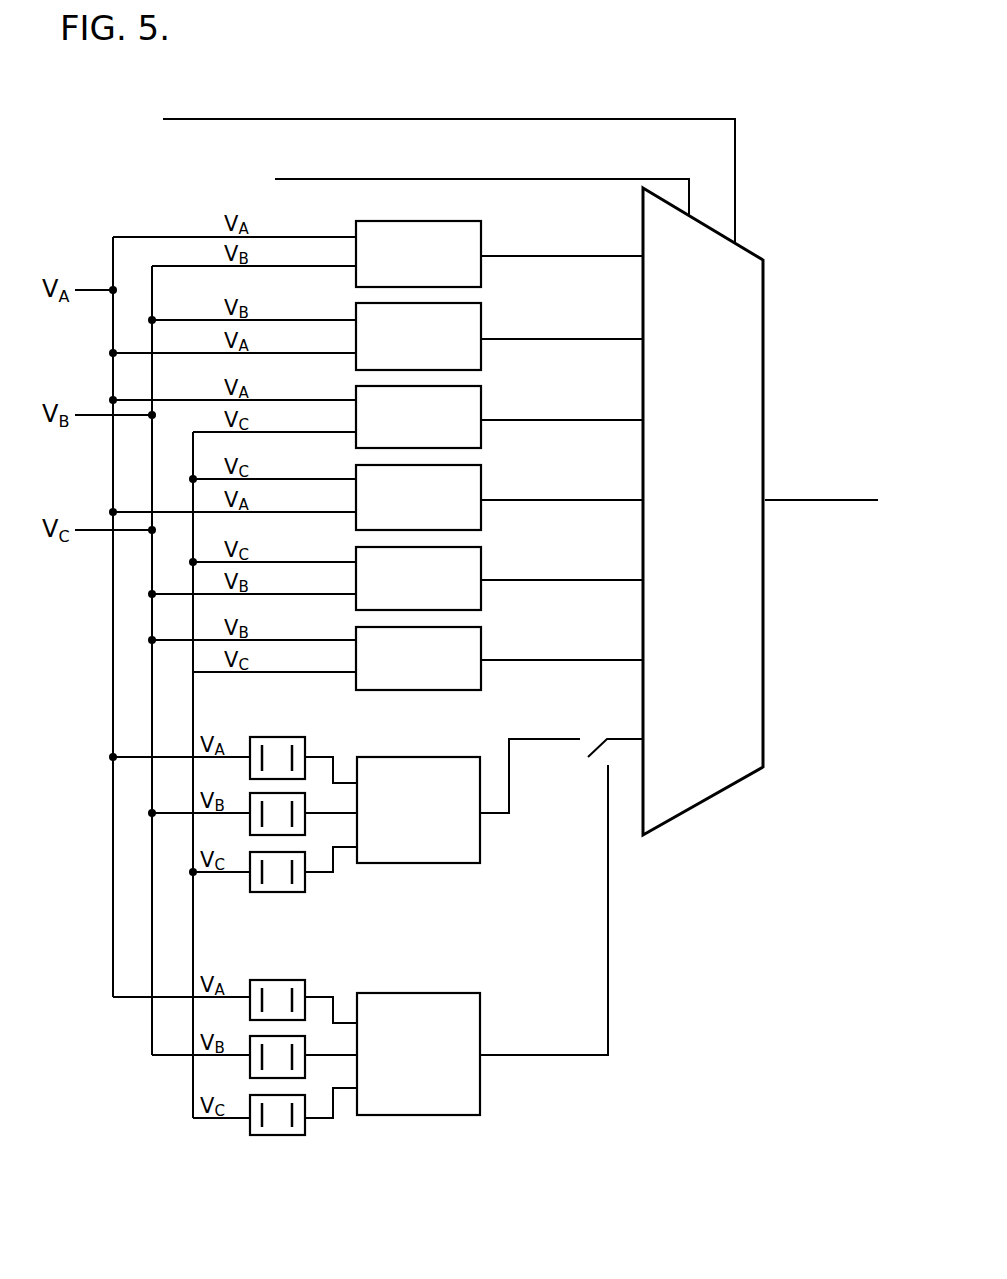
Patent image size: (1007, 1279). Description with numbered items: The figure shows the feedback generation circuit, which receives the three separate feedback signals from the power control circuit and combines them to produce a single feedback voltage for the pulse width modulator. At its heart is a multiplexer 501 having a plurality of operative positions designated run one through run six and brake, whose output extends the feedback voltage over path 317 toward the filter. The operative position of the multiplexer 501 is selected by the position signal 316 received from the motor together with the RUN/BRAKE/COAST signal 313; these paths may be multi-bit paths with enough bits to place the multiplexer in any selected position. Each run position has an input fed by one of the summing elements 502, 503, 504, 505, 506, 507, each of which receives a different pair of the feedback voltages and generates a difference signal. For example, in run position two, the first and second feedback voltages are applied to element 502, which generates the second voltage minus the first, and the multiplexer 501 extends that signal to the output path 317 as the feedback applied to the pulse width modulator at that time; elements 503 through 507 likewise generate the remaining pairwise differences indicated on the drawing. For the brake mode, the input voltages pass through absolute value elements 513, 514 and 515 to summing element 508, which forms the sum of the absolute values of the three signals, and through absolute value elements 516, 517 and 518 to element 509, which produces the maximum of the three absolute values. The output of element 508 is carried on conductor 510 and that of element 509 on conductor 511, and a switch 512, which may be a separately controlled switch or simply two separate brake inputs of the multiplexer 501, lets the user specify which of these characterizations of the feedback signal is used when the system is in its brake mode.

The position signal 316 is at (563, 119).
The RUN/BRAKE/COAST signal 313 is at (478, 179).
The multiplexer 501 is at (745, 247).
The output path 317 is at (783, 500).
The summing element 502 is at (430, 221).
The summing element 503 is at (455, 303).
The summing element 504 is at (455, 386).
The summing element 505 is at (455, 465).
The summing element 506 is at (450, 547).
The summing element 507 is at (450, 627).
The summing element 508 is at (442, 757).
The maximum element 509 is at (443, 993).
The conductor 510 is at (530, 739).
The conductor 511 is at (608, 875).
The switch 512 is at (607, 738).
The absolute value element 513 is at (285, 737).
The absolute value element 514 is at (303, 822).
The absolute value element 515 is at (270, 892).
The absolute value element 516 is at (285, 980).
The absolute value element 517 is at (305, 1063).
The absolute value element 518 is at (292, 1135).